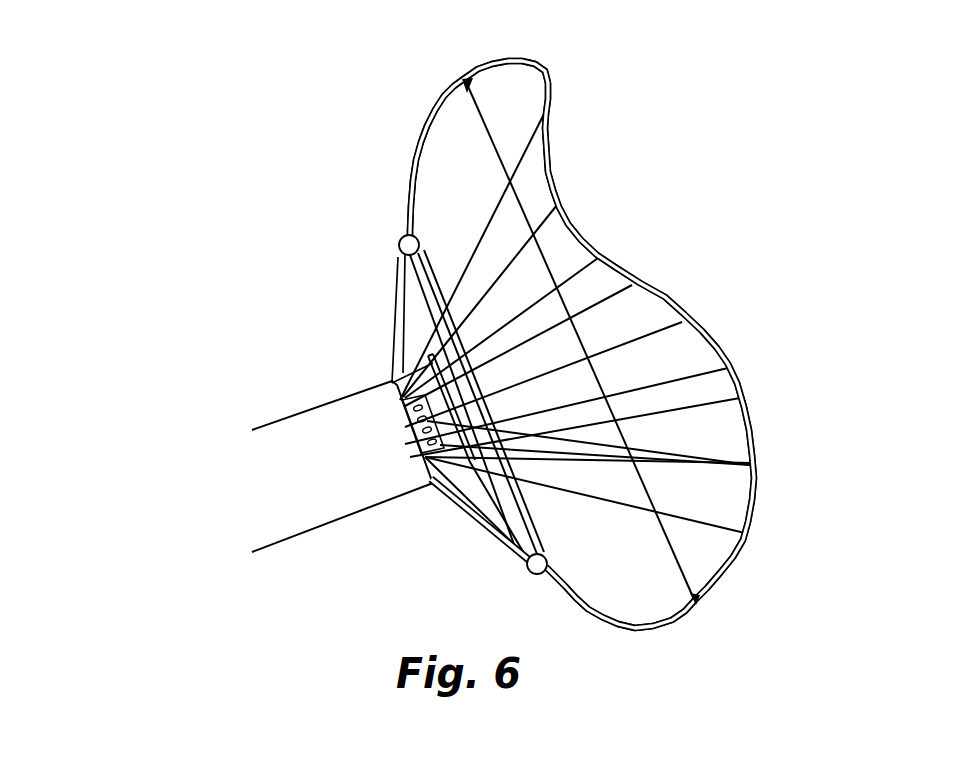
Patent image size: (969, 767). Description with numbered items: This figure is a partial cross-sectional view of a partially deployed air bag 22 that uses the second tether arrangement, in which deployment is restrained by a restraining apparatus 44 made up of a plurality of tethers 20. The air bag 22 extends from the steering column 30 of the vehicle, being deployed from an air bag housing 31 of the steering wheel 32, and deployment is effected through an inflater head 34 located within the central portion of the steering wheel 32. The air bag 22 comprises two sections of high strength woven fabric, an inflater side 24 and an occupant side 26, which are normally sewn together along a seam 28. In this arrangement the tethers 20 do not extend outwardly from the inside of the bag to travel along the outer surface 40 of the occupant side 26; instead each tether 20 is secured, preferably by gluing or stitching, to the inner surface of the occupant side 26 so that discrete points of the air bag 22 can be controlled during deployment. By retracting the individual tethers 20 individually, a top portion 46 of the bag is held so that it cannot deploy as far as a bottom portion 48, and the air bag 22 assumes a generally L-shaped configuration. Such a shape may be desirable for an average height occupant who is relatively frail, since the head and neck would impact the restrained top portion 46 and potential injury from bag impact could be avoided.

The tethers 20 is at (476, 254).
The air bag 22 is at (797, 196).
The inflater side 24 is at (403, 149).
The occupant side 26 is at (531, 60).
The seam 28 is at (494, 146).
The steering column 30 is at (330, 566).
The air bag housing 31 is at (436, 472).
The steering wheel 32 is at (399, 312).
The inflater head 34 is at (417, 423).
The outer surface 40 is at (622, 264).
The restraining apparatus 44 is at (627, 592).
The top portion 46 is at (648, 177).
The bottom portion 48 is at (775, 420).